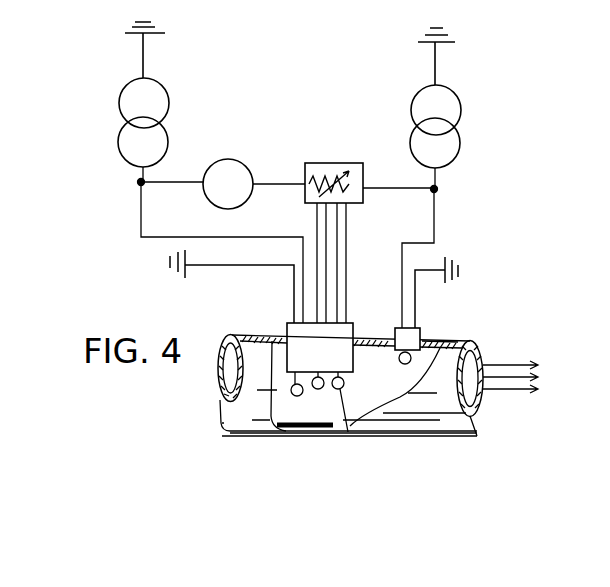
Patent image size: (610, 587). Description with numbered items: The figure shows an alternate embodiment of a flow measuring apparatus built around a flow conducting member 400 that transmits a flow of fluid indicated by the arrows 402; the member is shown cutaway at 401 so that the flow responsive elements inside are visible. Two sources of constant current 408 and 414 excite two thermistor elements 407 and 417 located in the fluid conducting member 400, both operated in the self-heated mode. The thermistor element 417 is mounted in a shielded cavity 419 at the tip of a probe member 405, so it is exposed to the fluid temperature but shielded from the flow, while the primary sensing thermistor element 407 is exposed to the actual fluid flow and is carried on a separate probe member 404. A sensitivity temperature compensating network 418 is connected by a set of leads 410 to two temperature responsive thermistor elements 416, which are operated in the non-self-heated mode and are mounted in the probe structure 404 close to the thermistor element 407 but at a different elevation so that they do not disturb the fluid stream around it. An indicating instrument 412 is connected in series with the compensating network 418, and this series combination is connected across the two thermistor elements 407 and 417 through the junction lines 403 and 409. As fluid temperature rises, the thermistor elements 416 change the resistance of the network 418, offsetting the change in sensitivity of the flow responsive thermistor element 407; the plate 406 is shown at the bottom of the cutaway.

The flow conducting member 400 is at (290, 438).
The cutaway 401 is at (410, 403).
The arrows 402 is at (520, 364).
The junction line 403 is at (140, 182).
The probe member 404 is at (291, 323).
The probe member 405 is at (421, 330).
The electrode plate 406 is at (305, 411).
The thermistor element 407 is at (291, 393).
The source of constant current 408 is at (118, 127).
The junction line 409 is at (437, 188).
The set of leads 410 is at (310, 234).
The indicating instrument 412 is at (238, 159).
The source of constant current 414 is at (461, 110).
The temperature responsive thermistor elements 416 is at (321, 389).
The thermistor element 417 is at (447, 344).
The sensitivity temperature compensating network 418 is at (335, 163).
The shielded cavity 419 is at (415, 366).